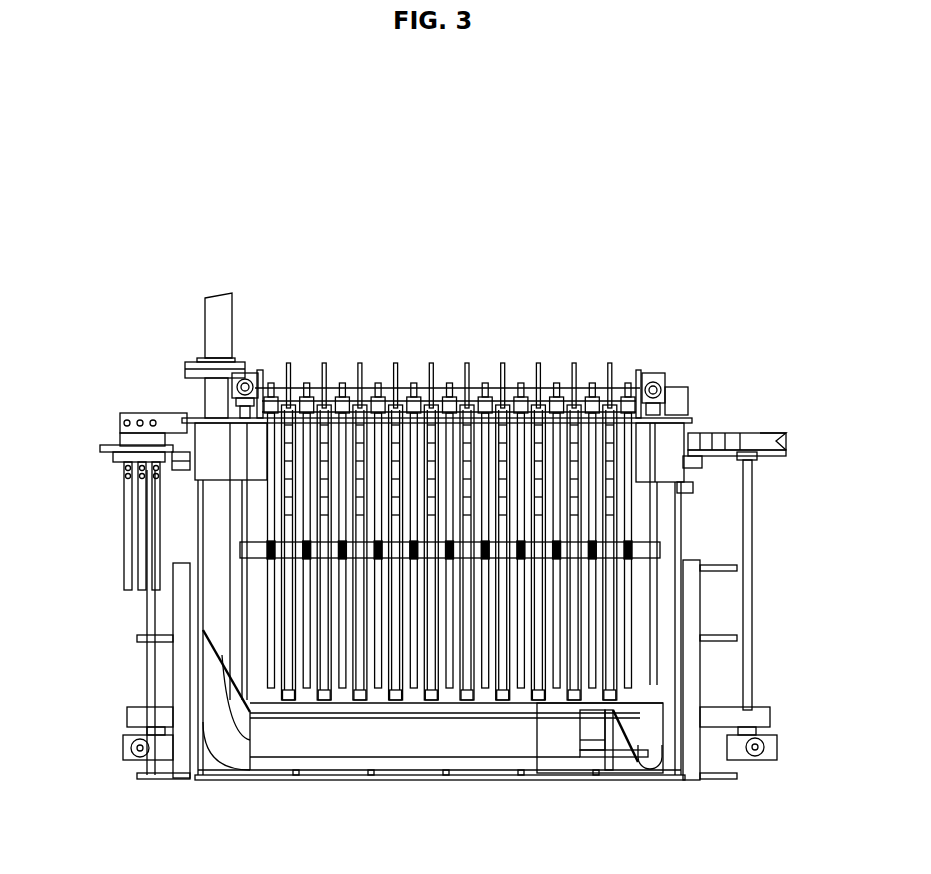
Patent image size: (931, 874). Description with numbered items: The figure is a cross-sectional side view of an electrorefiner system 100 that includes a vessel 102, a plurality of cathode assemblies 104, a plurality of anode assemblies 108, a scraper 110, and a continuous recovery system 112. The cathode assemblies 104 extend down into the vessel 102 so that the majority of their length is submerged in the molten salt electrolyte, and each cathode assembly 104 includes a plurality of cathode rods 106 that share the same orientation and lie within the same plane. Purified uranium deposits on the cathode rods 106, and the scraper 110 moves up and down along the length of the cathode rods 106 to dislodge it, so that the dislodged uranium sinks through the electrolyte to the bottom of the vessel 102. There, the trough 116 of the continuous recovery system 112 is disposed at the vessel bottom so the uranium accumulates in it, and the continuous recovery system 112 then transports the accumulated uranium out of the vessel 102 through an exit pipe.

The electrorefiner system 100 is at (460, 146).
The vessel 102 is at (688, 517).
The cathode assemblies 104 is at (307, 386).
The cathode rods 106 is at (310, 667).
The anode assemblies 108 is at (278, 648).
The scraper 110 is at (655, 549).
The continuous recovery system 112 is at (190, 323).
The trough 116 is at (648, 723).